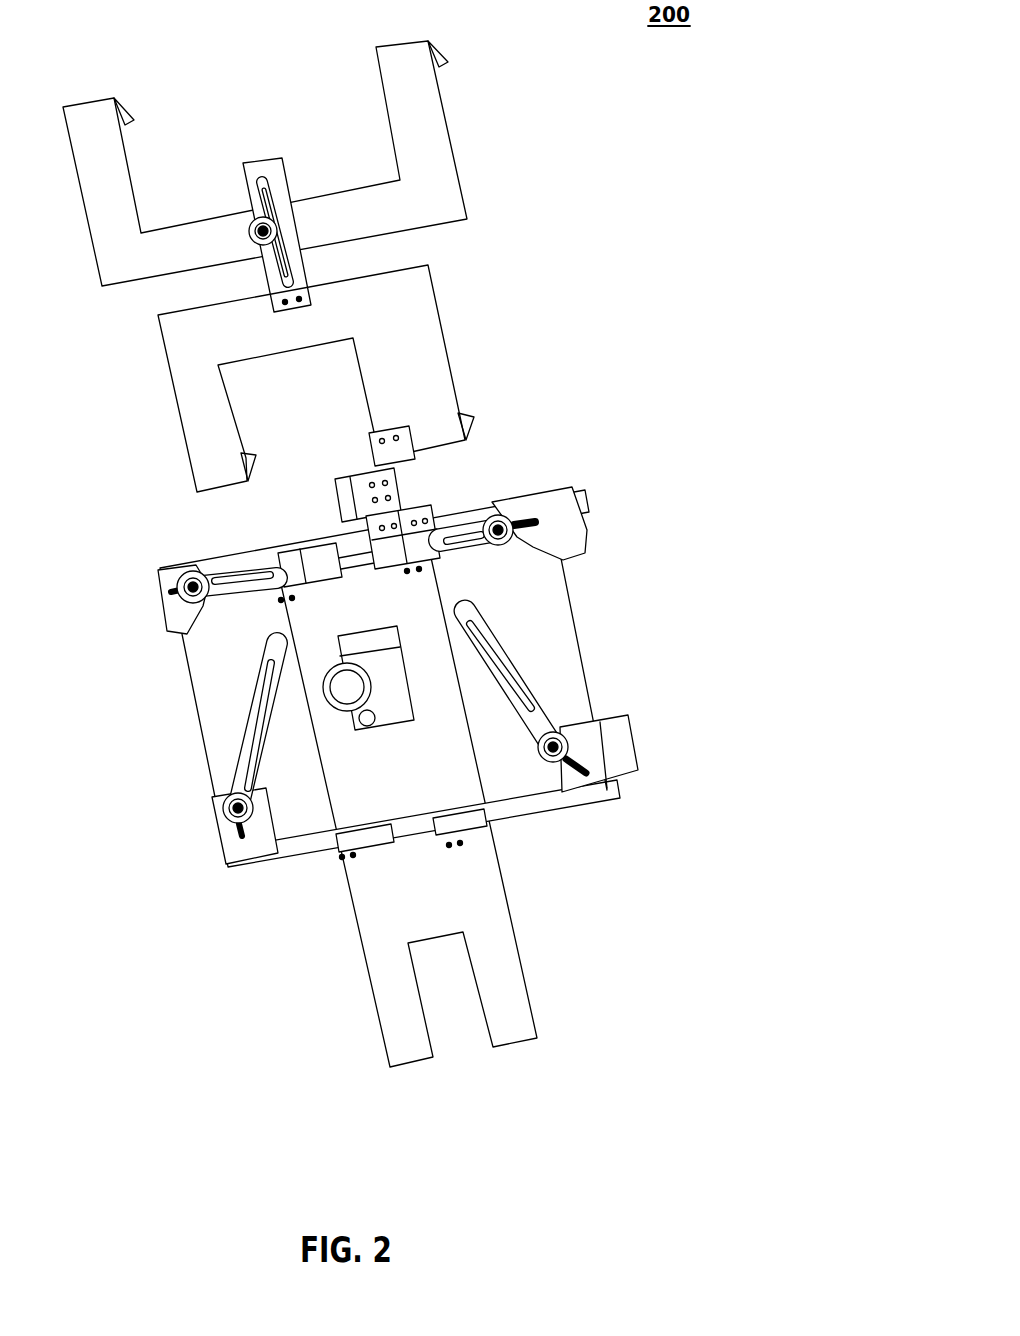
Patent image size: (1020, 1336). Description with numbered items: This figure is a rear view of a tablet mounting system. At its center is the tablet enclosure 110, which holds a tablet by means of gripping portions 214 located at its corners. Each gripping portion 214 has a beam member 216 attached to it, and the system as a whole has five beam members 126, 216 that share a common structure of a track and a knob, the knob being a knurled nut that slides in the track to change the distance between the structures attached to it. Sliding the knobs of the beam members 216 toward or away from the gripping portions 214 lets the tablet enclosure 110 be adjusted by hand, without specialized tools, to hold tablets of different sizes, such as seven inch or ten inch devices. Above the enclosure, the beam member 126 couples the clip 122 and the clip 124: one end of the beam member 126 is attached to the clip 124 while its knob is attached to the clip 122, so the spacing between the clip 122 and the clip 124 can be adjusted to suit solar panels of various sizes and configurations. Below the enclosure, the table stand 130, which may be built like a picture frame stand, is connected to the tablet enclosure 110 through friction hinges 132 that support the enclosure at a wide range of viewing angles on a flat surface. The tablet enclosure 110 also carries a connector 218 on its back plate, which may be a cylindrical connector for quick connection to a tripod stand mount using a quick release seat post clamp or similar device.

The tablet enclosure 110 is at (552, 618).
The clip 122 is at (430, 108).
The clip 124 is at (427, 338).
The beam member 126 is at (281, 166).
The table stand 130 is at (500, 950).
The friction hinges 132 is at (392, 577).
The gripping portions 214 is at (168, 580).
The beam members 216 is at (244, 560).
The connector 218 is at (353, 692).